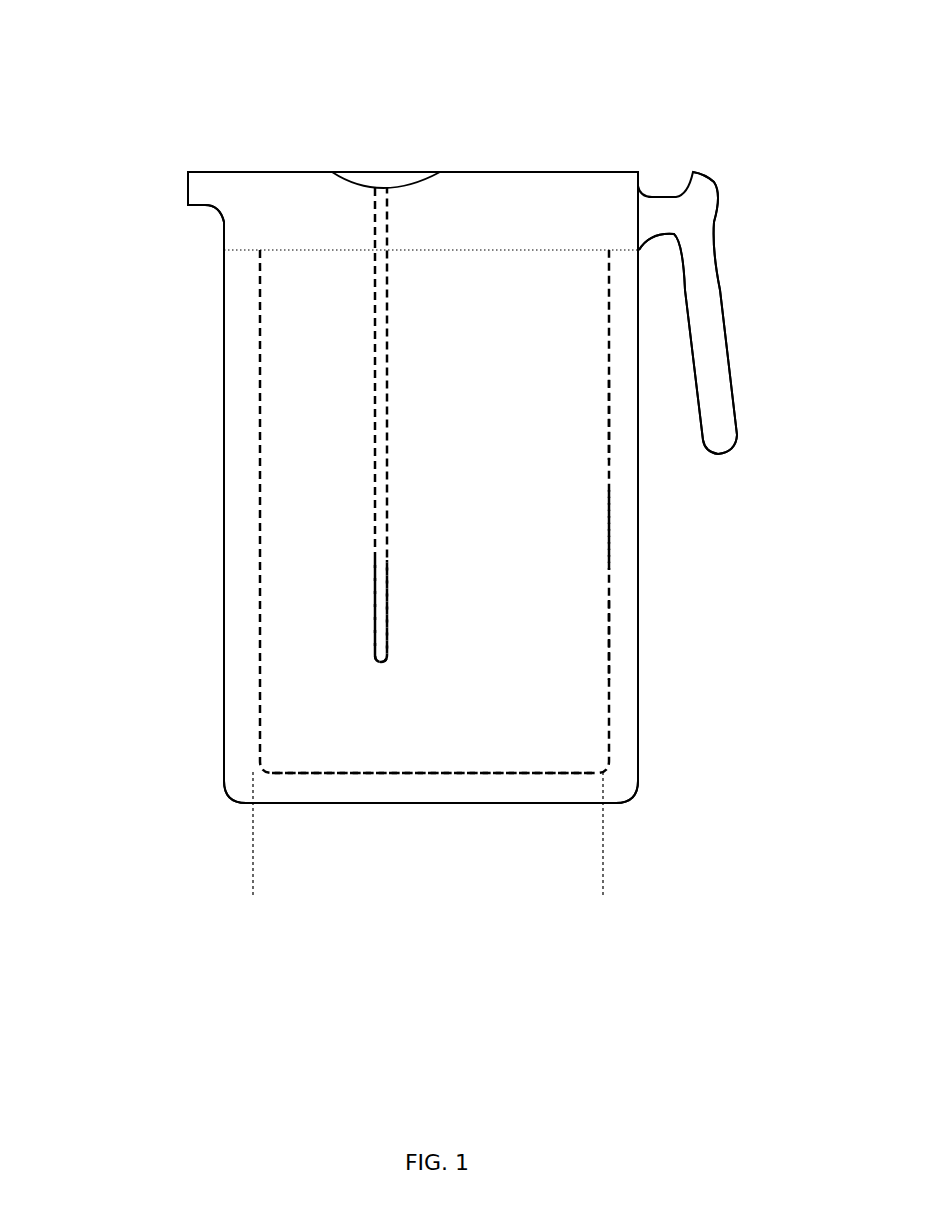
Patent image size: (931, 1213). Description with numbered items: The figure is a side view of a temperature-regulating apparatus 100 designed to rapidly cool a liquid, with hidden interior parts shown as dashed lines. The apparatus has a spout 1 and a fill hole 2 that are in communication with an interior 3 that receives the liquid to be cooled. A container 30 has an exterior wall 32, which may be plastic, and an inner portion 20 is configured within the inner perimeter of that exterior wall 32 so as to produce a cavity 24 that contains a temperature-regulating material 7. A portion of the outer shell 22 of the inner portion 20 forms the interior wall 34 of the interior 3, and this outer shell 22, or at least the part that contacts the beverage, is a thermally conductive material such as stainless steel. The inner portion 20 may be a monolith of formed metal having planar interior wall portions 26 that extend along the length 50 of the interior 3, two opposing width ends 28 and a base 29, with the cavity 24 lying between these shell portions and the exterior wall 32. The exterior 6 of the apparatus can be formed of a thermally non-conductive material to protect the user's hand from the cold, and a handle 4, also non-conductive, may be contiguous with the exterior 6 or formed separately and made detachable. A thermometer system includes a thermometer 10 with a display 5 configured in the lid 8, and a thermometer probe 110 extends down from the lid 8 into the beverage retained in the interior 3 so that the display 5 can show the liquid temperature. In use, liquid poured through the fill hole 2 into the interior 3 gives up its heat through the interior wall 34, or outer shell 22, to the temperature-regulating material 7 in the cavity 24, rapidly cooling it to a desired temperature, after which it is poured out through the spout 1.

The temperature-regulating apparatus 100 is at (178, 122).
The spout 1 is at (188, 190).
The fill hole 2 is at (588, 172).
The lid 8 is at (482, 172).
The display 5 is at (378, 185).
The handle 4 is at (708, 335).
The planar interior wall portions 26 is at (451, 360).
The interior 3 is at (283, 393).
The exterior 6 is at (224, 498).
The container 30 is at (232, 635).
The thermometer 10 is at (378, 510).
The thermometer probe 110 is at (380, 600).
The width end 28 is at (608, 418).
The interior wall 34 is at (606, 531).
The outer shell 22 is at (606, 639).
The base 29 is at (442, 773).
The exterior wall 32 is at (638, 438).
The inner portion 20 is at (627, 491).
The cavity 24 is at (622, 590).
The temperature-regulating material 7 is at (620, 692).
The length 50 is at (603, 877).